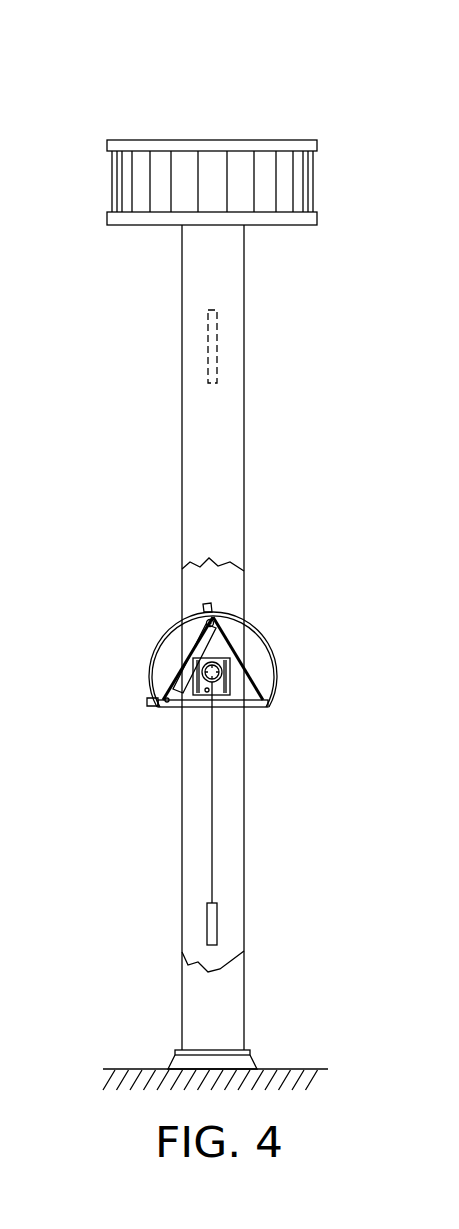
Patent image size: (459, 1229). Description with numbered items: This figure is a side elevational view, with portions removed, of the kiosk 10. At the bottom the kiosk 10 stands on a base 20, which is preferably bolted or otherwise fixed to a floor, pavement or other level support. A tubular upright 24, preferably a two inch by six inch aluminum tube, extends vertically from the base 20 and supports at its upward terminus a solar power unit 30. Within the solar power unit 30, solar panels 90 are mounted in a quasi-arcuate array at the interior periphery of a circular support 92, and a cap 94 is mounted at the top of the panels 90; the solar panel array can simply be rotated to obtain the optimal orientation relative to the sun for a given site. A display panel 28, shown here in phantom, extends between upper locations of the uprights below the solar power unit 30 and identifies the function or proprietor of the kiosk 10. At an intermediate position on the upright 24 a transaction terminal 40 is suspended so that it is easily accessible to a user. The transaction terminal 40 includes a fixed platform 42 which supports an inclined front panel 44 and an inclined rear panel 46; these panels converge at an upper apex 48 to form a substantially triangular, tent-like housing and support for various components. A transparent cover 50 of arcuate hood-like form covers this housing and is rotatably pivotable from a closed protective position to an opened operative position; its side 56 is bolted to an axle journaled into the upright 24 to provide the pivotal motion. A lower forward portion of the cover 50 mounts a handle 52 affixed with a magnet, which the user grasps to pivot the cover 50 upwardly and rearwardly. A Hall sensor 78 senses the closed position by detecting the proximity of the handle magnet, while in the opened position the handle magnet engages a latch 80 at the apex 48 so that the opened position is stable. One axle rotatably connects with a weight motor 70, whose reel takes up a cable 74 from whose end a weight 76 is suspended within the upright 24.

The kiosk 10 is at (113, 104).
The base 20 is at (180, 1062).
The tubular upright 24 is at (235, 885).
The display panel 28 is at (217, 341).
The solar power unit 30 is at (215, 122).
The transaction terminal 40 is at (124, 654).
The fixed platform 42 is at (253, 703).
The inclined front panel 44 is at (192, 643).
The inclined rear panel 46 is at (237, 657).
The upper apex 48 is at (230, 612).
The transparent cover 50 is at (155, 648).
The handle 52 is at (150, 704).
The side of cover 56 is at (167, 667).
The weight motor 70 is at (223, 685).
The cable 74 is at (213, 813).
The weight 76 is at (214, 921).
The Hall sensor 78 is at (168, 707).
The latch 80 is at (217, 625).
The solar panels 90 is at (160, 186).
The circular support 92 is at (282, 218).
The cap 94 is at (302, 145).